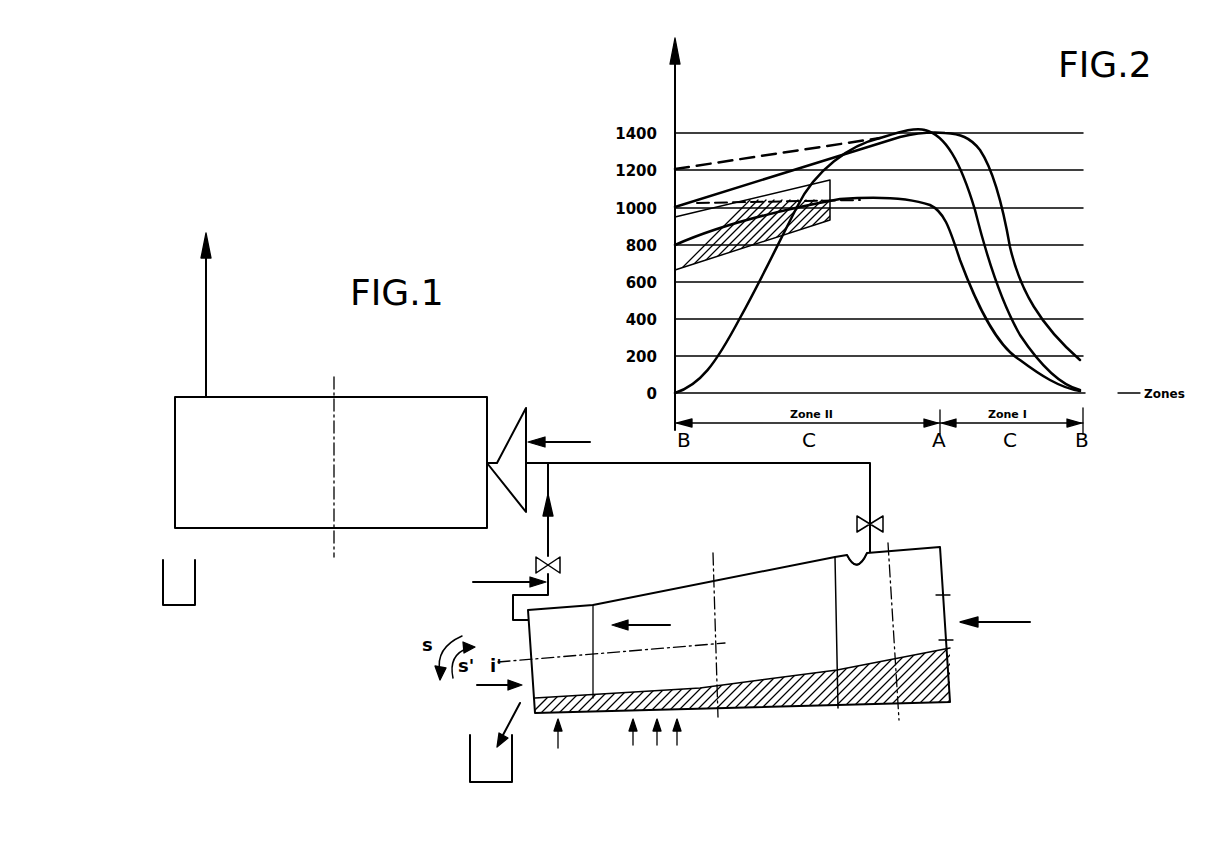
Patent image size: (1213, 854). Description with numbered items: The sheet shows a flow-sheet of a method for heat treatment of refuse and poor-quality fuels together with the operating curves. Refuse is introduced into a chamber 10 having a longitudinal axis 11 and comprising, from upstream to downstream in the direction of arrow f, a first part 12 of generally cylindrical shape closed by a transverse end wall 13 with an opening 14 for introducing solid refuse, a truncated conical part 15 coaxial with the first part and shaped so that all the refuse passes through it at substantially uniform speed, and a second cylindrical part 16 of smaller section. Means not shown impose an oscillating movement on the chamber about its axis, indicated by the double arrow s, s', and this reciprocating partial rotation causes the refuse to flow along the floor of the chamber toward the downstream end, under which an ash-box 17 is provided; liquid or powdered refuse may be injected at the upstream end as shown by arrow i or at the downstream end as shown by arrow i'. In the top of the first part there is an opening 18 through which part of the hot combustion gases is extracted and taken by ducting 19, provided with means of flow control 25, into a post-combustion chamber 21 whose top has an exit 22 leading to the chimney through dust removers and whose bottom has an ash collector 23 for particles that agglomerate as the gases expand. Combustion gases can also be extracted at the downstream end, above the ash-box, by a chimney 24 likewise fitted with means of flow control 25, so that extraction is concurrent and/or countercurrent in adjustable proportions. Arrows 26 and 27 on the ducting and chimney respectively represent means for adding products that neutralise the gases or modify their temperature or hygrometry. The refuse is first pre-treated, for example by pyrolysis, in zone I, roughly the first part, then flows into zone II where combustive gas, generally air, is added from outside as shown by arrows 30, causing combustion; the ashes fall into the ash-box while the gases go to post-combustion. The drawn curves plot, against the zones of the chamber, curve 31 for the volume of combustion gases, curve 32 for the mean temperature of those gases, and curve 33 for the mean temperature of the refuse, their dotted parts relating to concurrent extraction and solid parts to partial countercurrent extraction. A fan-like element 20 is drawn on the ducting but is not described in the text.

In FIG. 1, the chamber 10 is at (958, 567).
In FIG. 1, the longitudinal axis 11 is at (668, 647).
In FIG. 1, the first part 12 is at (931, 542).
In FIG. 1, the transverse end wall 13 is at (953, 677).
In FIG. 1, the opening 14 is at (947, 600).
In FIG. 1, the truncated conical part 15 is at (740, 728).
In FIG. 1, the second cylindrical part 16 is at (562, 747).
In FIG. 1, the ash-box 17 is at (470, 759).
In FIG. 1, the opening 18 is at (849, 552).
In FIG. 1, the ducting 19 is at (748, 463).
In FIG. 1, the fan 20 is at (518, 425).
In FIG. 1, the post-combustion chamber 21 is at (410, 414).
In FIG. 1, the exit 22 is at (206, 352).
In FIG. 1, the ash collector 23 is at (196, 598).
In FIG. 1, the chimney 24 is at (508, 612).
In FIG. 1, the means of flow control 25 is at (558, 565).
In FIG. 1, the arrow 26 is at (566, 441).
In FIG. 1, the arrow 27 is at (500, 582).
In FIG. 1, the arrows 30 is at (658, 747).
In FIG. 2, the curve 31 is at (710, 367).
In FIG. 2, the curve 32 is at (1028, 294).
In FIG. 2, the curve 33 is at (906, 199).